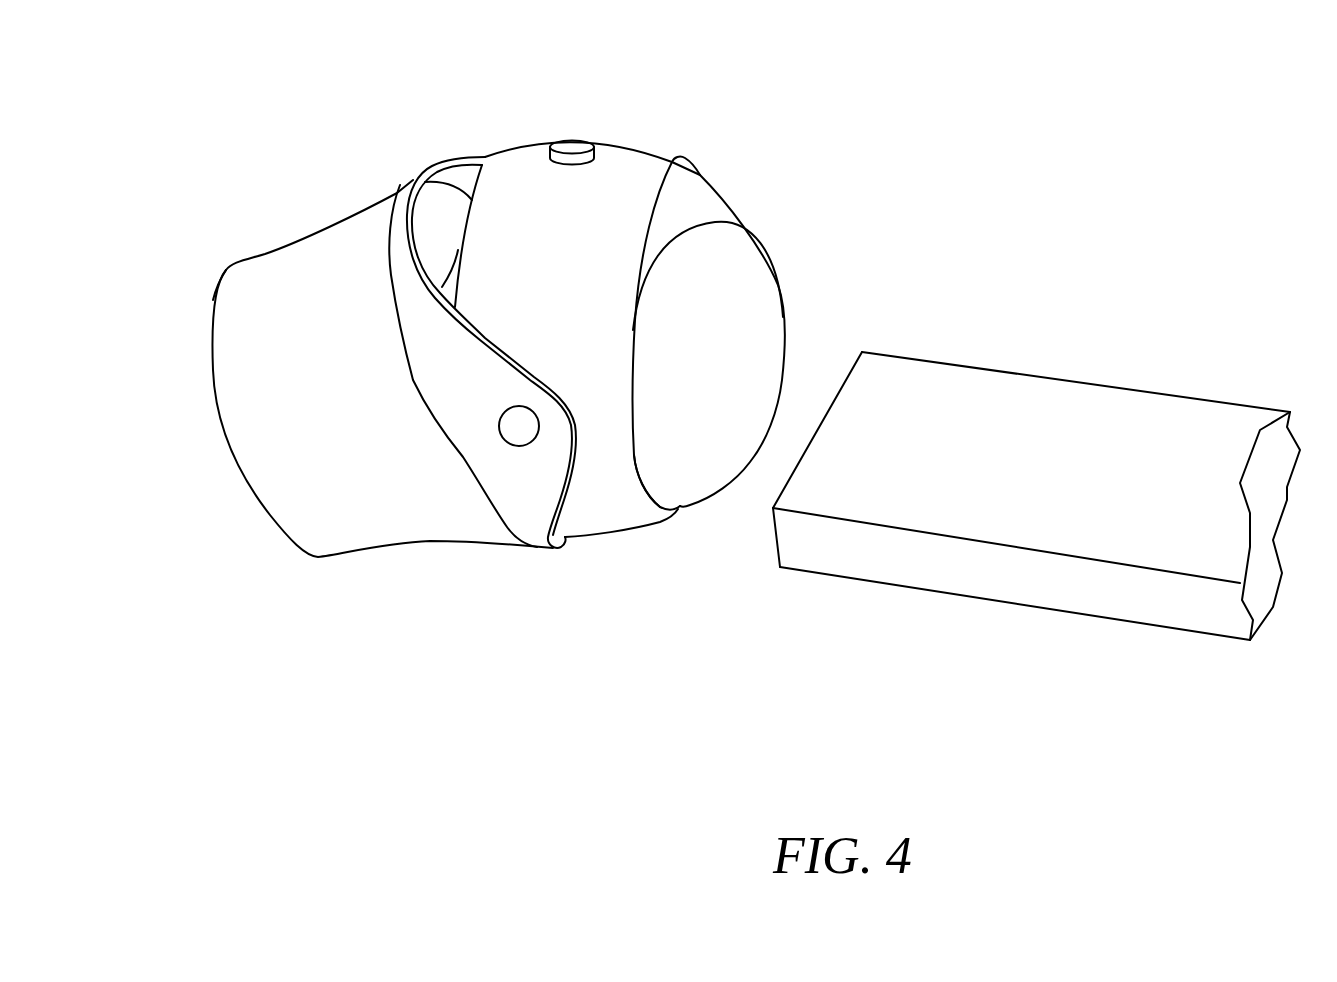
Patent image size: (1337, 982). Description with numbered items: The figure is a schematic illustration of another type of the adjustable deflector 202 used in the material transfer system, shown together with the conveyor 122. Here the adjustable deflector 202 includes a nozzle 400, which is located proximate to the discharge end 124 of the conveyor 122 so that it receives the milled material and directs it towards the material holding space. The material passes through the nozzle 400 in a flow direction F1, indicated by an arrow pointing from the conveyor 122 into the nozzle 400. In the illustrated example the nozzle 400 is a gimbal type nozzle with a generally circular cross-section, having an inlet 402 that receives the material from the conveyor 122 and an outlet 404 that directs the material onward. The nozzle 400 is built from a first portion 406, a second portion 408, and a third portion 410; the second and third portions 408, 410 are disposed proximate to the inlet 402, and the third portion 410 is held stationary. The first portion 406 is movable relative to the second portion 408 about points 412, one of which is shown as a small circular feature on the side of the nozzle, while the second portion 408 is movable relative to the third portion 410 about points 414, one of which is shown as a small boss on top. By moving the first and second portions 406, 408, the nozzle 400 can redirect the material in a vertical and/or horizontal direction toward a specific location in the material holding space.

The adjustable deflector 202 is at (270, 222).
The nozzle 400 is at (745, 171).
The inlet 402 is at (798, 272).
The outlet 404 is at (203, 427).
The first portion 406 is at (267, 298).
The second portion 408 is at (518, 163).
The third portion 410 is at (683, 458).
The points 412 is at (512, 446).
The points 414 is at (577, 139).
The conveyor 122 is at (1103, 412).
The discharge end 124 is at (750, 530).
The flow direction F1 is at (700, 371).